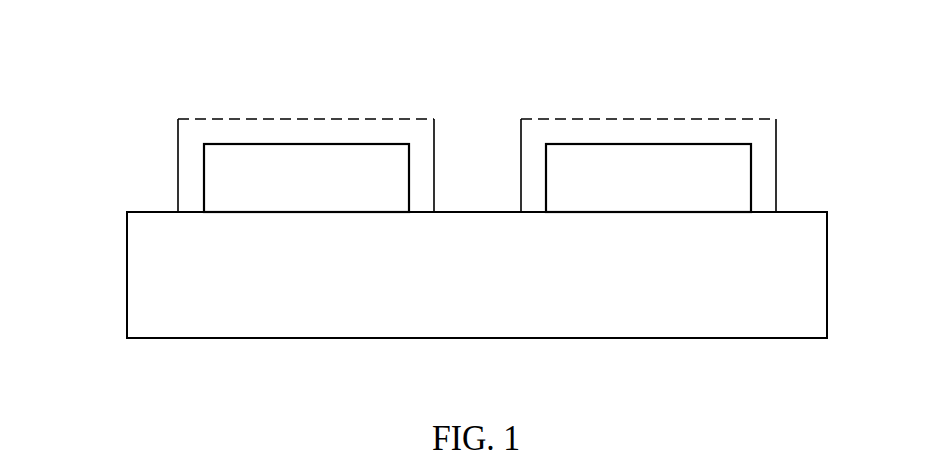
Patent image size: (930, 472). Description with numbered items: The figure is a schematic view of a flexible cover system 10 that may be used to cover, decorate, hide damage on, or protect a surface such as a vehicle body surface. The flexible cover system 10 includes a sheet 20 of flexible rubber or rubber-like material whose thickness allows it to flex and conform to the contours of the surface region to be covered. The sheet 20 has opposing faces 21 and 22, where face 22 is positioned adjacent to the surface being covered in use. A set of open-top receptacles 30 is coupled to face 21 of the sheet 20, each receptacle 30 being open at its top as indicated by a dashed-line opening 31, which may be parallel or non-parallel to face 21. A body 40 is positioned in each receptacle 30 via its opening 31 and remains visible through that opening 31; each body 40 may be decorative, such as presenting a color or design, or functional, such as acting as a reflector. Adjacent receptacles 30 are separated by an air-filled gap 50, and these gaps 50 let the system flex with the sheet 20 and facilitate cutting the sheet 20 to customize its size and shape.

The flexible cover system 10 is at (110, 78).
The sheet 20 is at (127, 275).
The face 21 is at (149, 212).
The face 22 is at (197, 338).
The receptacle 30 is at (178, 158).
The opening 31 is at (282, 118).
The body 40 is at (385, 167).
The air-filled gap 50 is at (478, 160).